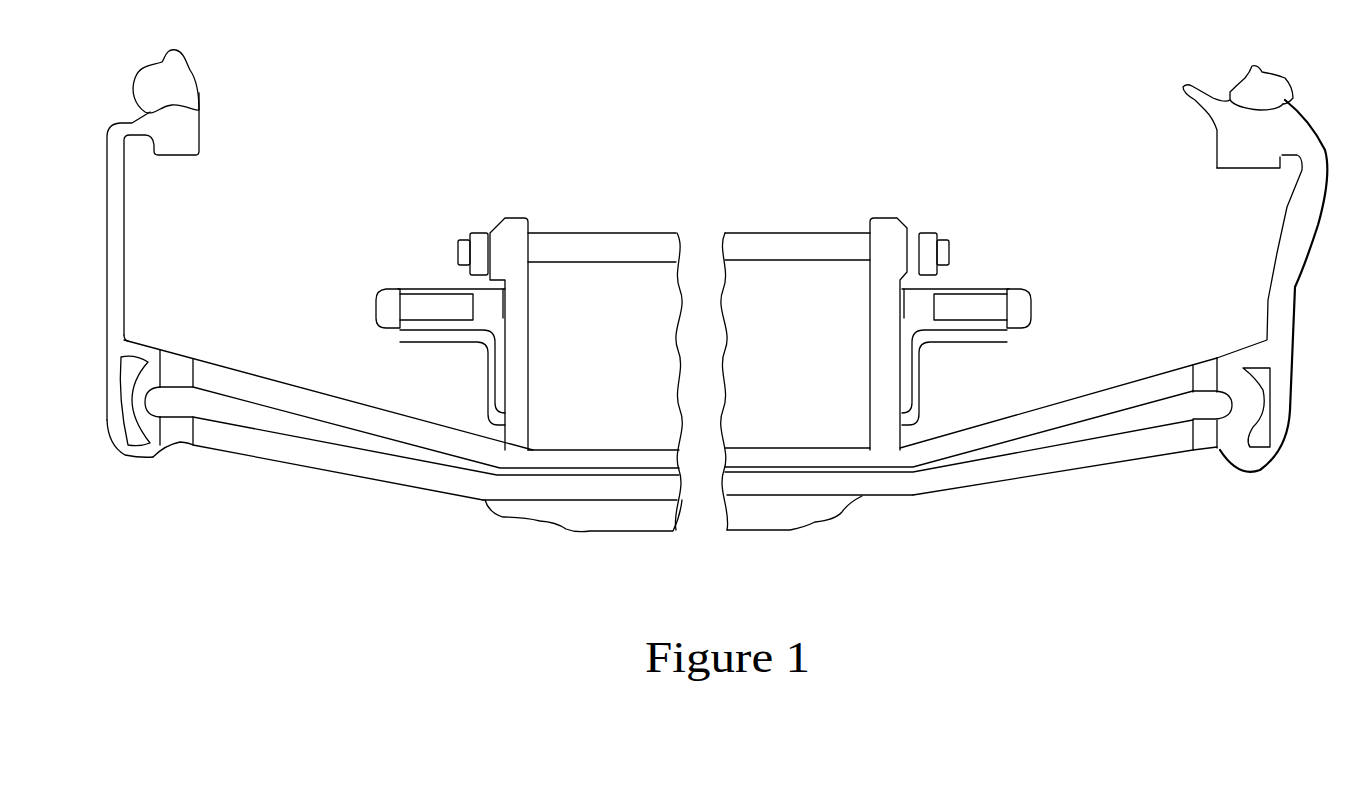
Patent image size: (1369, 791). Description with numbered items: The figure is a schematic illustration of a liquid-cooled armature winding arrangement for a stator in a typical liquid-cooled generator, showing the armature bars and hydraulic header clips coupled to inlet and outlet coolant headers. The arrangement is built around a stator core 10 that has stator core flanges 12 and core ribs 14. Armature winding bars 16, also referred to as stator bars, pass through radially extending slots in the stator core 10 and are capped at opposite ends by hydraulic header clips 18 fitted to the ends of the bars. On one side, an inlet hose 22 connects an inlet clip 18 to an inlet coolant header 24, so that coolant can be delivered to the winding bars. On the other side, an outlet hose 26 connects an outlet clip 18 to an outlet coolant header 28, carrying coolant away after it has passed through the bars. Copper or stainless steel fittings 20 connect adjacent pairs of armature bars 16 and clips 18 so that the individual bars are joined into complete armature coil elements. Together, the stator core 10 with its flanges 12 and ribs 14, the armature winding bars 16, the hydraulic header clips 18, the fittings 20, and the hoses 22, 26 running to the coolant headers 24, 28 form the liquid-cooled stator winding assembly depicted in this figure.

The stator core 10 is at (752, 505).
The stator core flanges 12 is at (518, 229).
The core ribs 14 is at (797, 232).
The armature winding bars 16 is at (1050, 460).
The hydraulic header clips 18 is at (178, 370).
The fittings 20 is at (133, 412).
The inlet hose 22 is at (1288, 243).
The inlet coolant header 24 is at (1238, 152).
The outlet hose 26 is at (107, 247).
The outlet coolant header 28 is at (188, 138).